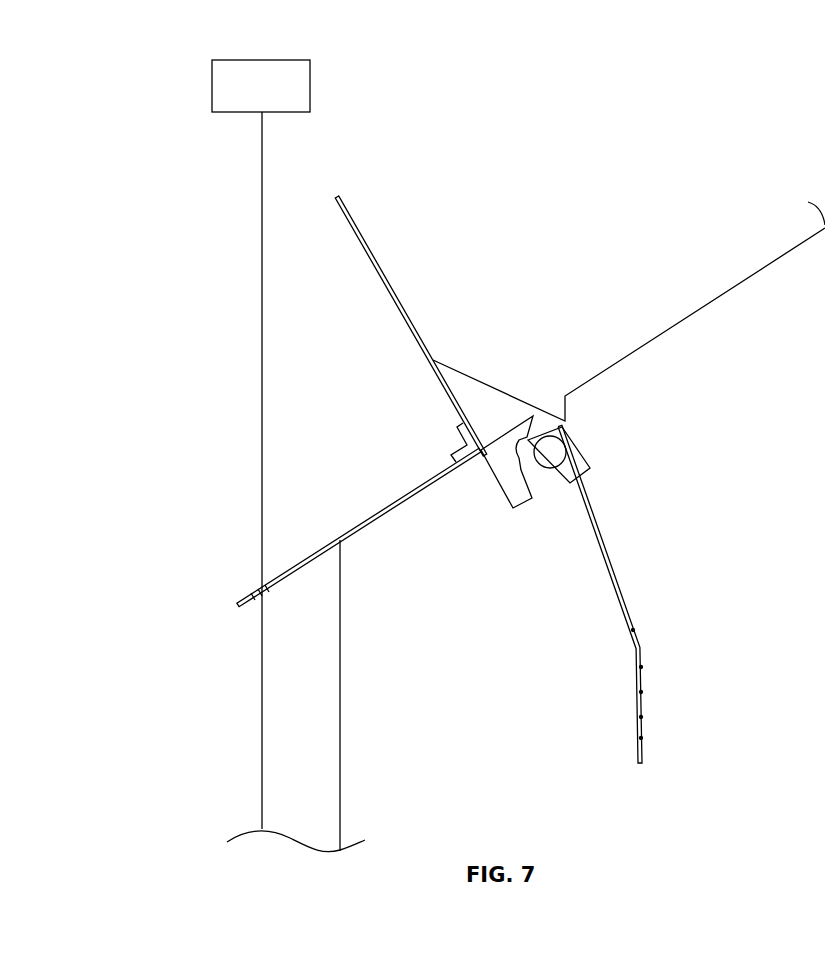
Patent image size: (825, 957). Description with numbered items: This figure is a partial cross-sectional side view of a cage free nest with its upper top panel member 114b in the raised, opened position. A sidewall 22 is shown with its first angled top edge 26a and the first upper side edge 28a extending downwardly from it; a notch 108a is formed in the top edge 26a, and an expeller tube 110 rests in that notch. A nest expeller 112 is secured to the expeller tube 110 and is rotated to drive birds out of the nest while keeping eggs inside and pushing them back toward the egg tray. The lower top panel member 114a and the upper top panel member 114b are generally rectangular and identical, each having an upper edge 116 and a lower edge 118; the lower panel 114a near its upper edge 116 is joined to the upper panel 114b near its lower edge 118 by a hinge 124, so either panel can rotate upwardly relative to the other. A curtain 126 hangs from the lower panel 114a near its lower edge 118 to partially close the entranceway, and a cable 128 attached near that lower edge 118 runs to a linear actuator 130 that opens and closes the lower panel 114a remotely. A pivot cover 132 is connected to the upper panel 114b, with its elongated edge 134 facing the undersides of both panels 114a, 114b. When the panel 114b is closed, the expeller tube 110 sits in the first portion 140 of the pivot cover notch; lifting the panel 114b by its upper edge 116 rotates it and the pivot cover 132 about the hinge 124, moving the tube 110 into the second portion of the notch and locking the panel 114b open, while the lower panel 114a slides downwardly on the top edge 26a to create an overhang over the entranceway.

The sidewall 22 is at (491, 686).
The first angled top edge 26a is at (694, 318).
The first upper side edge 28a is at (342, 716).
The notch 108a is at (557, 408).
The expeller tube 110 is at (545, 455).
The nest expeller 112 is at (628, 600).
The lower top panel member 114a is at (375, 515).
The upper top panel member 114b is at (393, 264).
The upper edge 116 is at (337, 195).
The lower edge 118 is at (237, 603).
The hinge 124 is at (457, 445).
The curtain 126 is at (260, 724).
The cable 128 is at (260, 390).
The linear actuator 130 is at (290, 87).
The pivot cover 132 is at (485, 402).
The elongated edge 134 is at (515, 508).
The first portion 140 is at (524, 452).